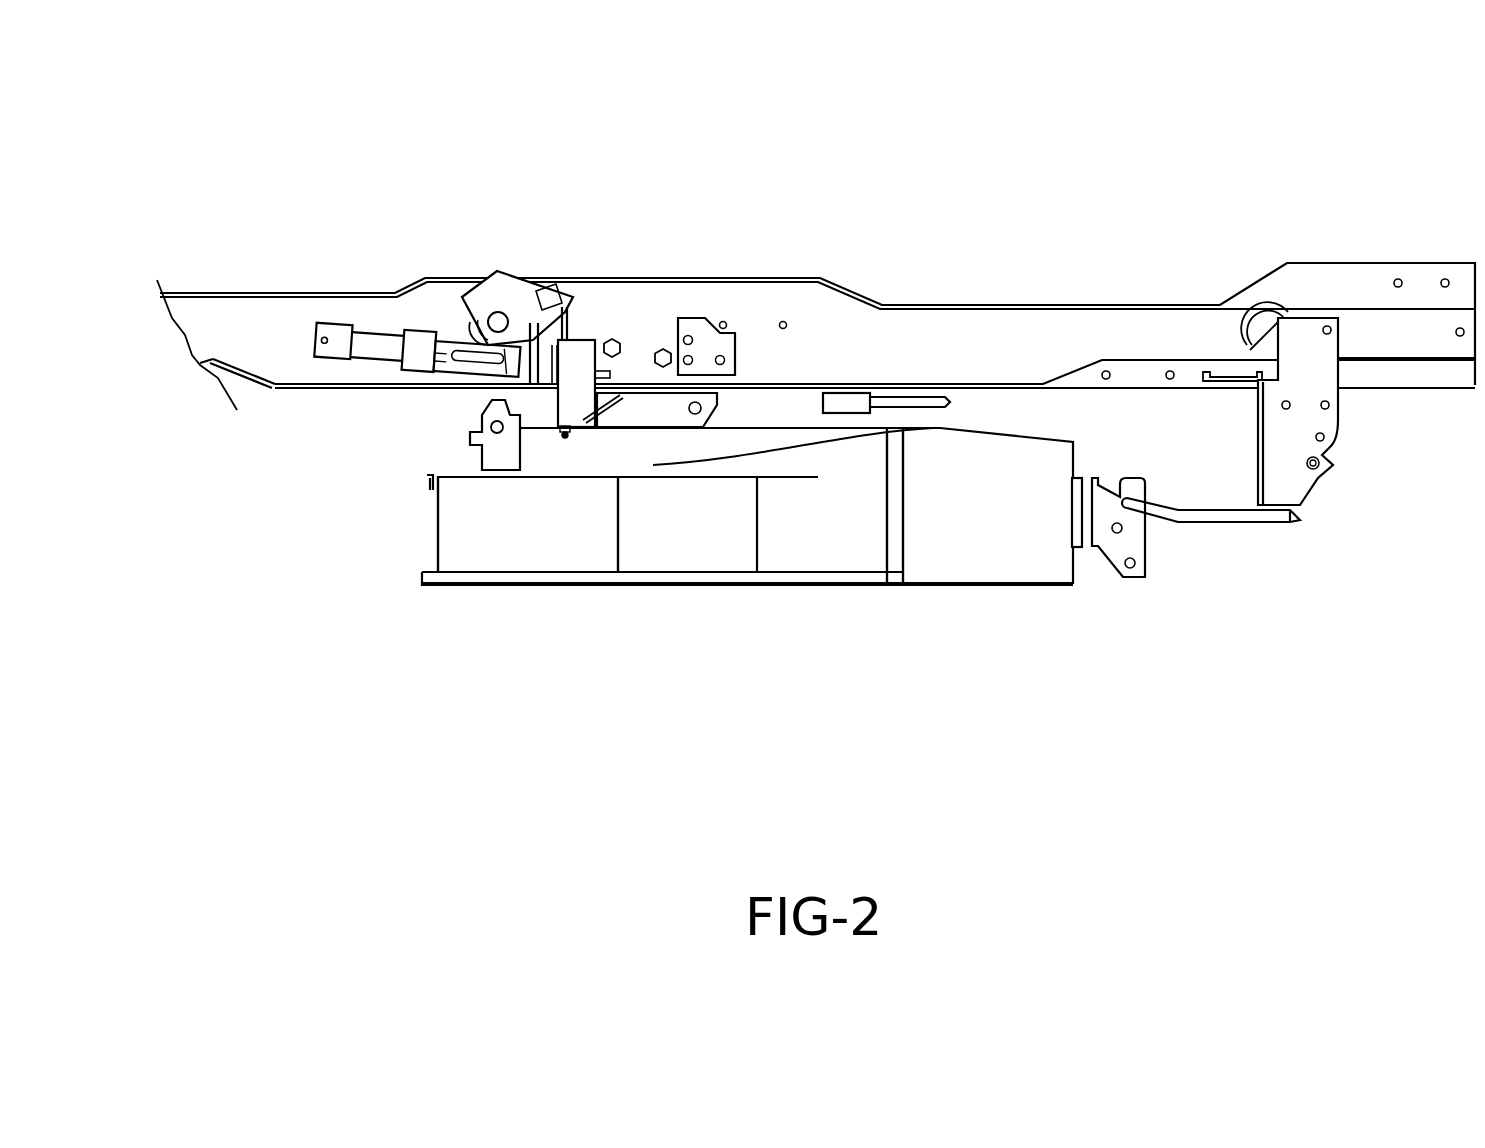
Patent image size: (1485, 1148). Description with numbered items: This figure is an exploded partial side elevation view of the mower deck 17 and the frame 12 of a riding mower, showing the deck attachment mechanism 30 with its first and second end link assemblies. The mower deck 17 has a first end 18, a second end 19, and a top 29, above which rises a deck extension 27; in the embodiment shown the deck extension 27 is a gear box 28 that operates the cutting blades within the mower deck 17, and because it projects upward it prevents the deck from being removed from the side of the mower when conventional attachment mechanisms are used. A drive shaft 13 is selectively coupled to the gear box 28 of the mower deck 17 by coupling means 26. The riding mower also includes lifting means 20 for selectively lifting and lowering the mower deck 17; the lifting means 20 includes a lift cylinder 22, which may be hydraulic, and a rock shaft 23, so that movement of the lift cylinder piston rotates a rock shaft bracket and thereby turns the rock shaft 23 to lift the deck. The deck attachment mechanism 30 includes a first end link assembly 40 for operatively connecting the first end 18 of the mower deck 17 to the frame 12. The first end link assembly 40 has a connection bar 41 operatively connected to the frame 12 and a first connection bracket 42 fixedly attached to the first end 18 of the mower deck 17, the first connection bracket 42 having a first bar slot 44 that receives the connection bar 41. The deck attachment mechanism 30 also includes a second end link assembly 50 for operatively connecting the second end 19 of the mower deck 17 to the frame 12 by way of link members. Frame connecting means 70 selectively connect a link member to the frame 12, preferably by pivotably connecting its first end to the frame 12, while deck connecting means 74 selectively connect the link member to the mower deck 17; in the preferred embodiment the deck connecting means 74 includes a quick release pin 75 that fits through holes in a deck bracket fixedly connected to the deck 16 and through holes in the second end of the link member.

The frame 12 is at (832, 300).
The drive shaft 13 is at (927, 404).
The deck 16 is at (693, 532).
The mower deck 17 is at (532, 567).
The first end 18 is at (1080, 583).
The second end 19 is at (428, 546).
The lifting means 20 is at (504, 297).
The lift cylinder 22 is at (380, 340).
The rock shaft 23 is at (534, 250).
The coupling means 26 is at (847, 404).
The deck extension 27 is at (588, 350).
The gear box 28 is at (583, 362).
The top 29 is at (790, 424).
The deck attachment mechanism 30 is at (816, 301).
The first end link assembly 40 is at (1203, 556).
The connection bar 41 is at (1240, 515).
The first connection bracket 42 is at (1138, 575).
The first bar slot 44 is at (1105, 472).
The second end link assembly 50 is at (665, 544).
The frame connecting means 70 is at (728, 312).
The deck connecting means 74 is at (409, 493).
The quick release pin 75 is at (483, 418).